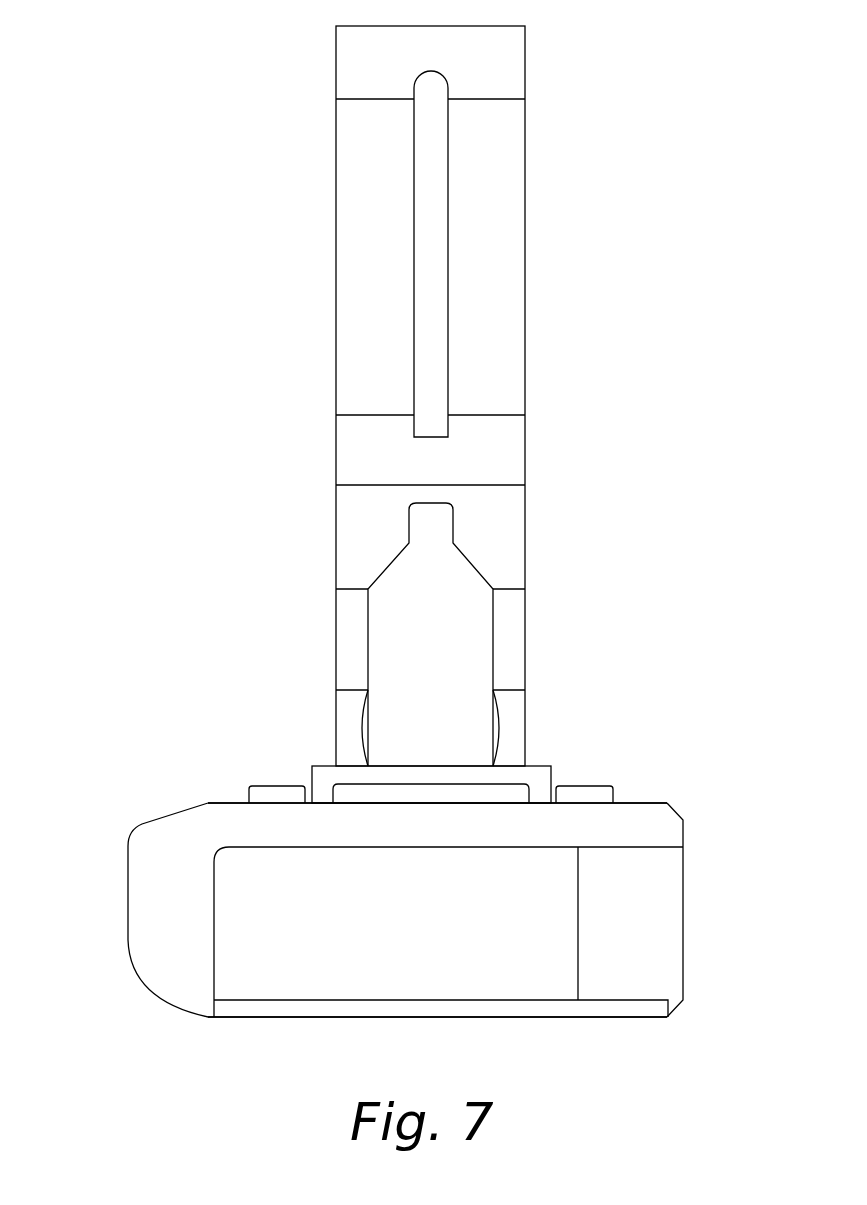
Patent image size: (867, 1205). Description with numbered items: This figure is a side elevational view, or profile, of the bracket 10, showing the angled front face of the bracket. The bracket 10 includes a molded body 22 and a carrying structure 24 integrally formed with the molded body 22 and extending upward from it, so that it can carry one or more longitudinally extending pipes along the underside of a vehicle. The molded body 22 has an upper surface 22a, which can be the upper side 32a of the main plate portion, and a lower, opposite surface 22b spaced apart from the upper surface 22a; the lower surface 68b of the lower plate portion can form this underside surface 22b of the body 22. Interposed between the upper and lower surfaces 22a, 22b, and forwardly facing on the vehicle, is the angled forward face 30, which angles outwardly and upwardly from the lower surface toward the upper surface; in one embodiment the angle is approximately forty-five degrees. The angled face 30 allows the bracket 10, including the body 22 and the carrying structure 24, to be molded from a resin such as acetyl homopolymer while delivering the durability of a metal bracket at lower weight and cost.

The bracket 10 is at (720, 480).
The carrying structure 24 is at (553, 432).
The molded body 22 is at (712, 908).
The angled forward face 30 is at (122, 978).
The upper surface 22a is at (635, 803).
The upper side 32a is at (492, 773).
The lower surface 22b is at (607, 1017).
The lower surface 68b is at (487, 1059).